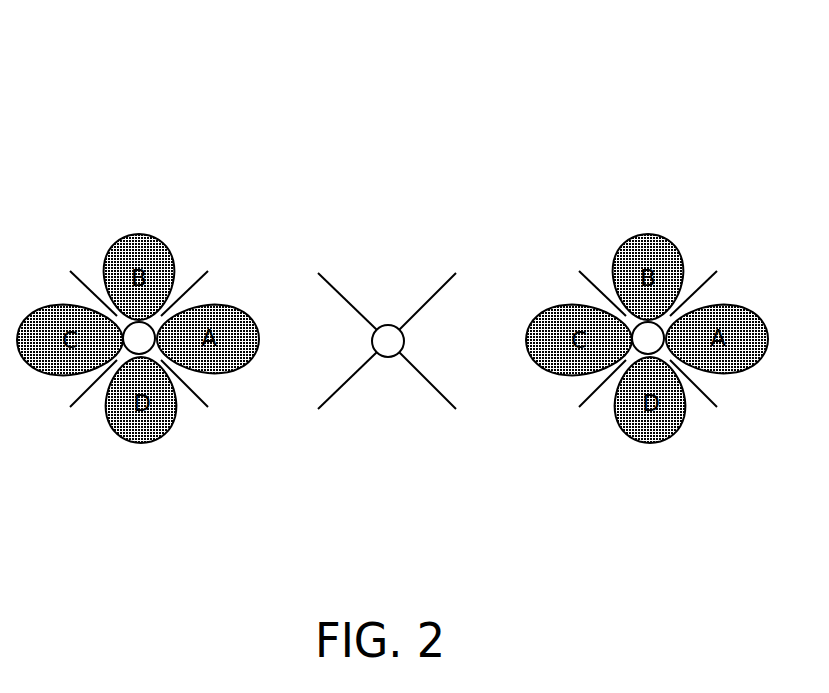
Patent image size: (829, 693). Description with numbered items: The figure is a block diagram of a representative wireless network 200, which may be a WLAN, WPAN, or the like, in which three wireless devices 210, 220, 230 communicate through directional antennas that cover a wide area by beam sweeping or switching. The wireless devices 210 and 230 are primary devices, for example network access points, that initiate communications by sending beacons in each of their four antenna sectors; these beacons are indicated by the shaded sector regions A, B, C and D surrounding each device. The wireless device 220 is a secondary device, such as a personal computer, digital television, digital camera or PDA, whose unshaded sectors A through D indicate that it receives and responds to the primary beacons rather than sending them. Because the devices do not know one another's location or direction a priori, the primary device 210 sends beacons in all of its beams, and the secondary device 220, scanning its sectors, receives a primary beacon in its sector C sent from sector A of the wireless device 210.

The wireless network 200 is at (82, 122).
The wireless device 210 is at (75, 445).
The wireless device 220 is at (388, 445).
The wireless device 230 is at (718, 447).